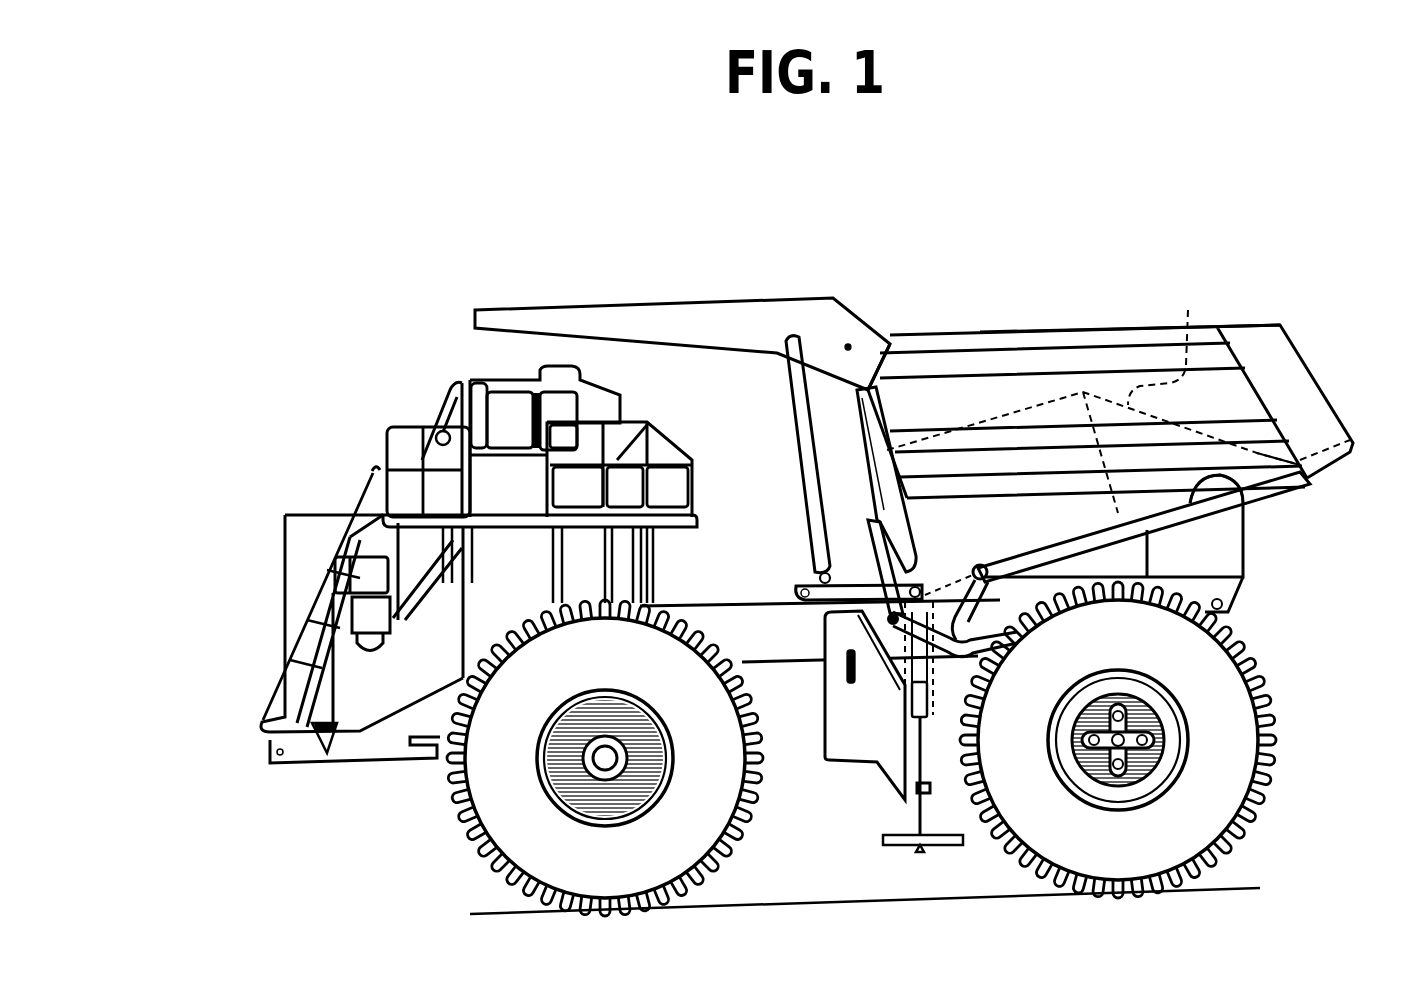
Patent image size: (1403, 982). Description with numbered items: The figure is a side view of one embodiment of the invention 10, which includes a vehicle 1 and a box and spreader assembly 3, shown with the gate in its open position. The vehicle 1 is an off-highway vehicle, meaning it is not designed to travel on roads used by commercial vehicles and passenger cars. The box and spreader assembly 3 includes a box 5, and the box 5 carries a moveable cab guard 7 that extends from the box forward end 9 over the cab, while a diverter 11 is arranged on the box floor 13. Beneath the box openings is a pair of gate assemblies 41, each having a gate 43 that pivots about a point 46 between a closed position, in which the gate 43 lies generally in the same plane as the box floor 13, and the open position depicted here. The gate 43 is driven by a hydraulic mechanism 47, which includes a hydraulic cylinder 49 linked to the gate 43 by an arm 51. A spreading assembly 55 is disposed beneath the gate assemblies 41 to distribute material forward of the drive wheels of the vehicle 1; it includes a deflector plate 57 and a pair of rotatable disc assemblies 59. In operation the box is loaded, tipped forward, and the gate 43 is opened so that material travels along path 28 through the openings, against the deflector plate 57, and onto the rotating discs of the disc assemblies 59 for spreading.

The vehicle 1 is at (378, 780).
The box and spreader assembly 3 is at (1323, 352).
The box 5 is at (1085, 330).
The moveable cab guard 7 is at (697, 322).
The box forward end 9 is at (893, 313).
The embodiment of the invention 10 is at (408, 351).
The diverter 11 is at (1118, 392).
The box floor 13 is at (1255, 470).
The path 28 is at (1215, 456).
The gate assembly 41 is at (858, 568).
The gate 43 is at (998, 636).
The pivot point 46 is at (985, 562).
The hydraulic mechanism 47 is at (840, 494).
The hydraulic cylinder 49 is at (868, 532).
The arm 51 is at (990, 650).
The spreading assembly 55 is at (882, 800).
The deflector plate 57 is at (893, 677).
The rotatable disc assembly 59 is at (904, 814).